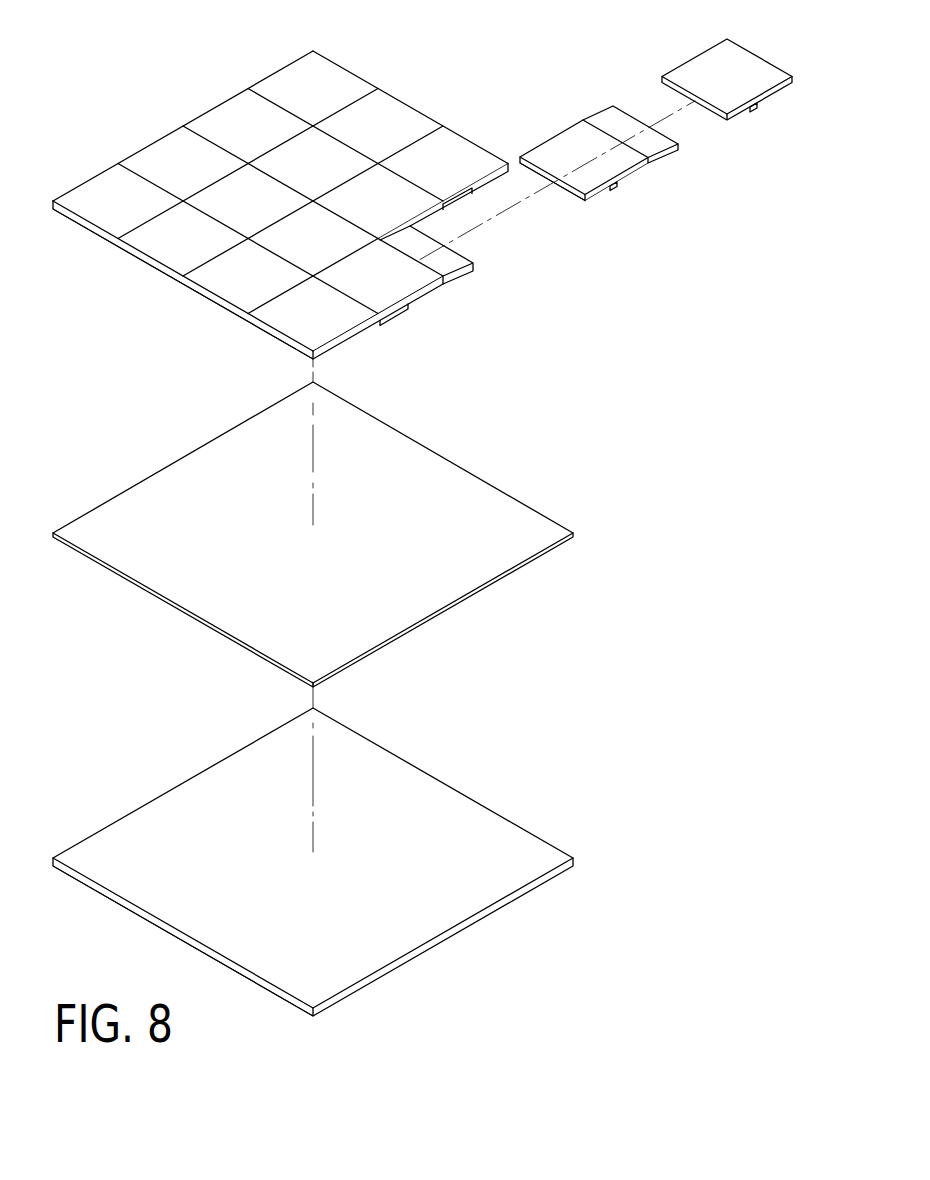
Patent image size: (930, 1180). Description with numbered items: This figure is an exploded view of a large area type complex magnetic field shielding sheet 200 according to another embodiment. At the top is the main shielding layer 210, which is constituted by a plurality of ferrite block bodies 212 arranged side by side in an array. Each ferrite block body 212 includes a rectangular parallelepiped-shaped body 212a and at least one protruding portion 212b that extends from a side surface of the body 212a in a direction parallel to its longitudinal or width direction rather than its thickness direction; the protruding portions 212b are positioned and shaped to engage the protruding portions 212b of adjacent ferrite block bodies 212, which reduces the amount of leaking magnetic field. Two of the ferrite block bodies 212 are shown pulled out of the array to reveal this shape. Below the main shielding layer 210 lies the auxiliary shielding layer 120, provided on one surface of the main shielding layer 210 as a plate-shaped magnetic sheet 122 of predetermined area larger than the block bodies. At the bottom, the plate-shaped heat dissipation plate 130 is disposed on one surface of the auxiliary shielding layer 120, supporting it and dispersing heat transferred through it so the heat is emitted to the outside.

The large area type complex magnetic field shielding sheet 200 is at (102, 41).
The main shielding layer 210 is at (449, 97).
The ferrite block body 212 is at (98, 190).
The body 212a is at (633, 171).
The protruding portion 212b is at (678, 156).
The auxiliary shielding layer 120 is at (598, 540).
The plate-shaped magnetic sheet 122 is at (462, 486).
The heat dissipation plate 130 is at (603, 875).